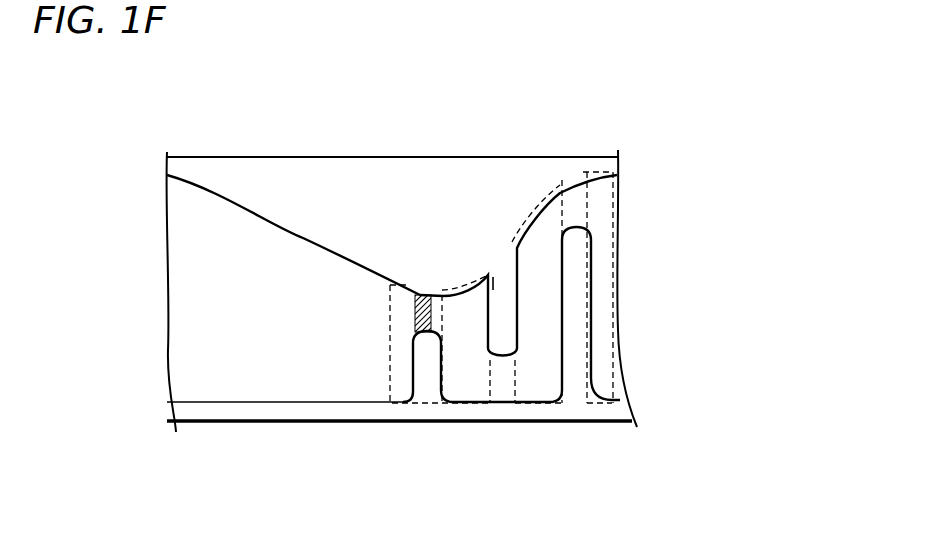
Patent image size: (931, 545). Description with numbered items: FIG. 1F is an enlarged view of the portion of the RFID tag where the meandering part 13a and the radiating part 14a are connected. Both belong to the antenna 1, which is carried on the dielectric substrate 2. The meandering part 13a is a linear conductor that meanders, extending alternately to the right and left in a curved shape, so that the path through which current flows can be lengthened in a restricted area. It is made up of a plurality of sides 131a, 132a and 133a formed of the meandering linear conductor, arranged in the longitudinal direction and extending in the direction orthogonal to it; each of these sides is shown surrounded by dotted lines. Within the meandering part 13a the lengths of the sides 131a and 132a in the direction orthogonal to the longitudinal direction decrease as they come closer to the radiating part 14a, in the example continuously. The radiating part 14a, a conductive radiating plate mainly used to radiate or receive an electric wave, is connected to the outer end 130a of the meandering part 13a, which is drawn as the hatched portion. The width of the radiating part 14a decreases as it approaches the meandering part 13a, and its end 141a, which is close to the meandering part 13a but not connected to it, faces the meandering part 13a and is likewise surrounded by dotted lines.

The antenna 1 is at (238, 205).
The dielectric substrate 2 is at (190, 157).
The meandering part 13a is at (613, 408).
The radiating part 14a is at (213, 395).
The outer end of the meandering part 130a is at (420, 295).
The side 131a is at (457, 285).
The side 132a is at (528, 230).
The side 133a is at (599, 168).
The end of the radiating part 141a is at (390, 405).